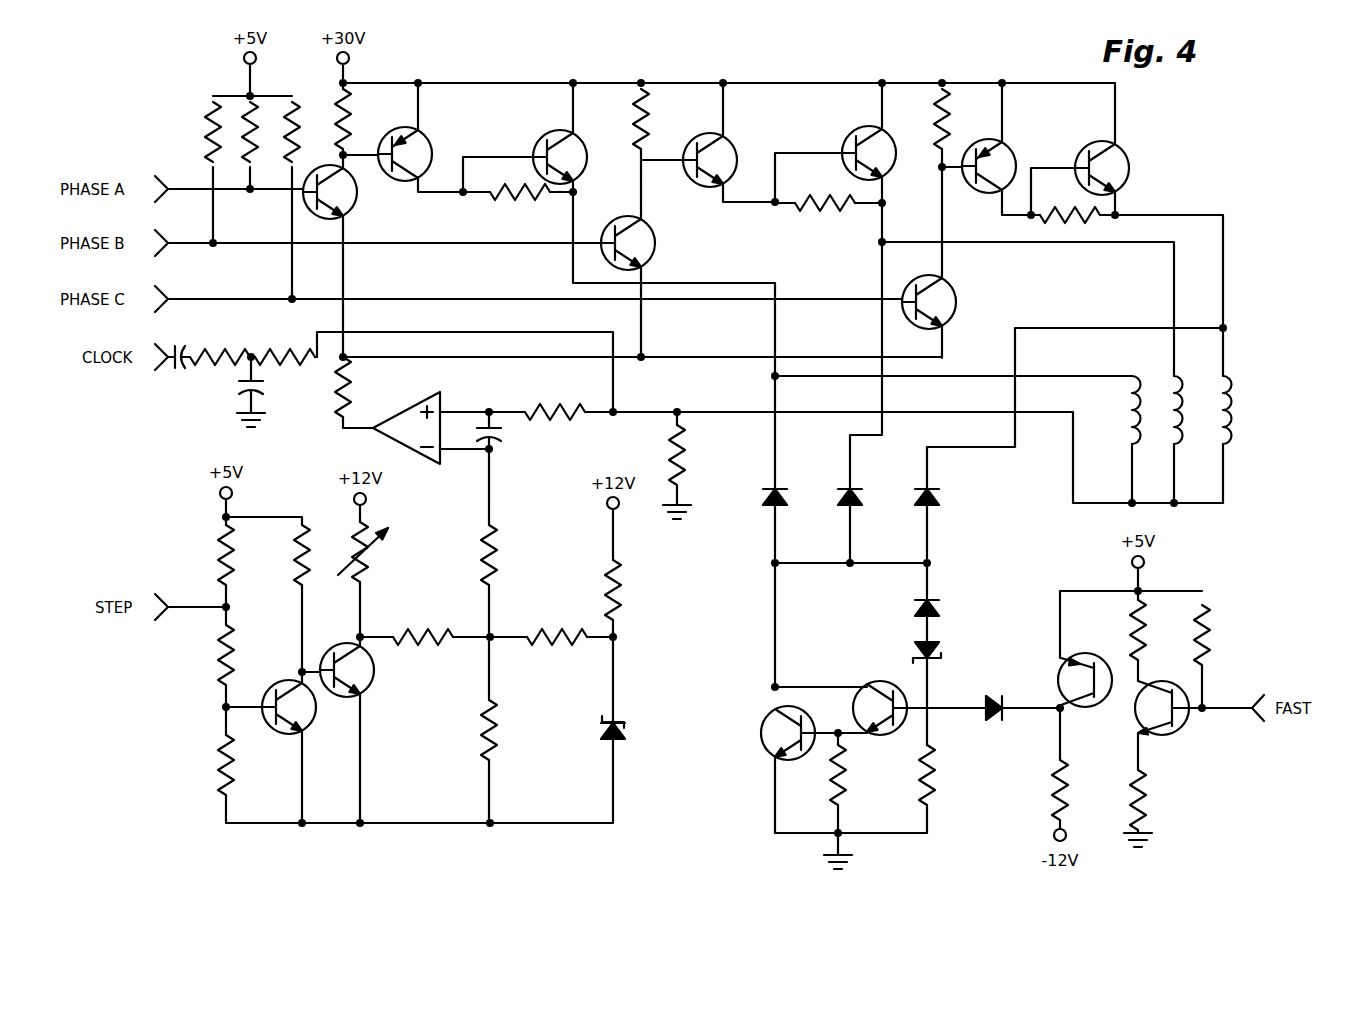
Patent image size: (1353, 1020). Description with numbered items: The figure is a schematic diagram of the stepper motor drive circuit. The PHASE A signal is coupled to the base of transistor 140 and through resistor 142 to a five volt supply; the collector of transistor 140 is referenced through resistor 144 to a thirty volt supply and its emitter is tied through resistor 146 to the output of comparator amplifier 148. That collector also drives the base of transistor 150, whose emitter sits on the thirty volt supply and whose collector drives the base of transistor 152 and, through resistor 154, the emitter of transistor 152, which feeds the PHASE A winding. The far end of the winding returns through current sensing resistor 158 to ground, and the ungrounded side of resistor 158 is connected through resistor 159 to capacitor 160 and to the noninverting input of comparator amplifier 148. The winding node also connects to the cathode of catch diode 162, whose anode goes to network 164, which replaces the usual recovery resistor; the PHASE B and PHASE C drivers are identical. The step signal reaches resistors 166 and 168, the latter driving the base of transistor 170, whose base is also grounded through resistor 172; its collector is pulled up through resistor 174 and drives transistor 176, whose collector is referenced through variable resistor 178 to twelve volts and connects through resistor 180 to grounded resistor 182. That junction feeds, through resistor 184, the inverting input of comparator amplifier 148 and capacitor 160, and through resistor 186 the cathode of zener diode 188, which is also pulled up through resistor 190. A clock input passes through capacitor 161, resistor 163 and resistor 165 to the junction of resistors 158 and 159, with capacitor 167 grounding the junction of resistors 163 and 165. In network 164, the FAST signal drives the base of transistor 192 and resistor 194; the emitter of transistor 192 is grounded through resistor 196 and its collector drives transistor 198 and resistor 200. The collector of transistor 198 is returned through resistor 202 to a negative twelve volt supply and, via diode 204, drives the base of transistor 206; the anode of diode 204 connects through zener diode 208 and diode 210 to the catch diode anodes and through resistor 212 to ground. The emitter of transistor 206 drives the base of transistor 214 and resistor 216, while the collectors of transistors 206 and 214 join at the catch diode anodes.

The transistor 140 is at (356, 193).
The resistor 142 is at (249, 125).
The resistor 144 is at (353, 124).
The resistor 146 is at (357, 382).
The comparator amplifier 148 is at (448, 396).
The transistor 150 is at (420, 143).
The transistor 152 is at (537, 141).
The resistor 154 is at (505, 198).
The current sensing resistor 158 is at (688, 450).
The resistor 159 is at (548, 400).
The capacitor 160 is at (504, 440).
The capacitor 161 is at (185, 380).
The catch diode 162 is at (768, 497).
The resistor 163 is at (220, 350).
The network 164 is at (957, 556).
The resistor 165 is at (297, 351).
The resistor 166 is at (216, 565).
The capacitor 167 is at (264, 392).
The resistor 168 is at (218, 665).
The transistor 170 is at (310, 718).
The resistor 172 is at (225, 770).
The resistor 174 is at (298, 568).
The transistor 176 is at (375, 680).
The variable resistor 178 is at (380, 560).
The resistor 180 is at (428, 628).
The resistor 182 is at (497, 727).
The resistor 184 is at (502, 562).
The resistor 186 is at (553, 650).
The zener diode 188 is at (626, 735).
The resistor 190 is at (626, 588).
The transistor 192 is at (1172, 726).
The resistor 194 is at (1212, 632).
The resistor 196 is at (1160, 788).
The transistor 198 is at (1080, 705).
The resistor 200 is at (1130, 643).
The resistor 202 is at (1057, 800).
The diode 204 is at (988, 700).
The transistor 206 is at (880, 683).
The zener diode 208 is at (940, 655).
The diode 210 is at (938, 610).
The resistor 212 is at (934, 785).
The transistor 214 is at (768, 736).
The resistor 216 is at (850, 785).